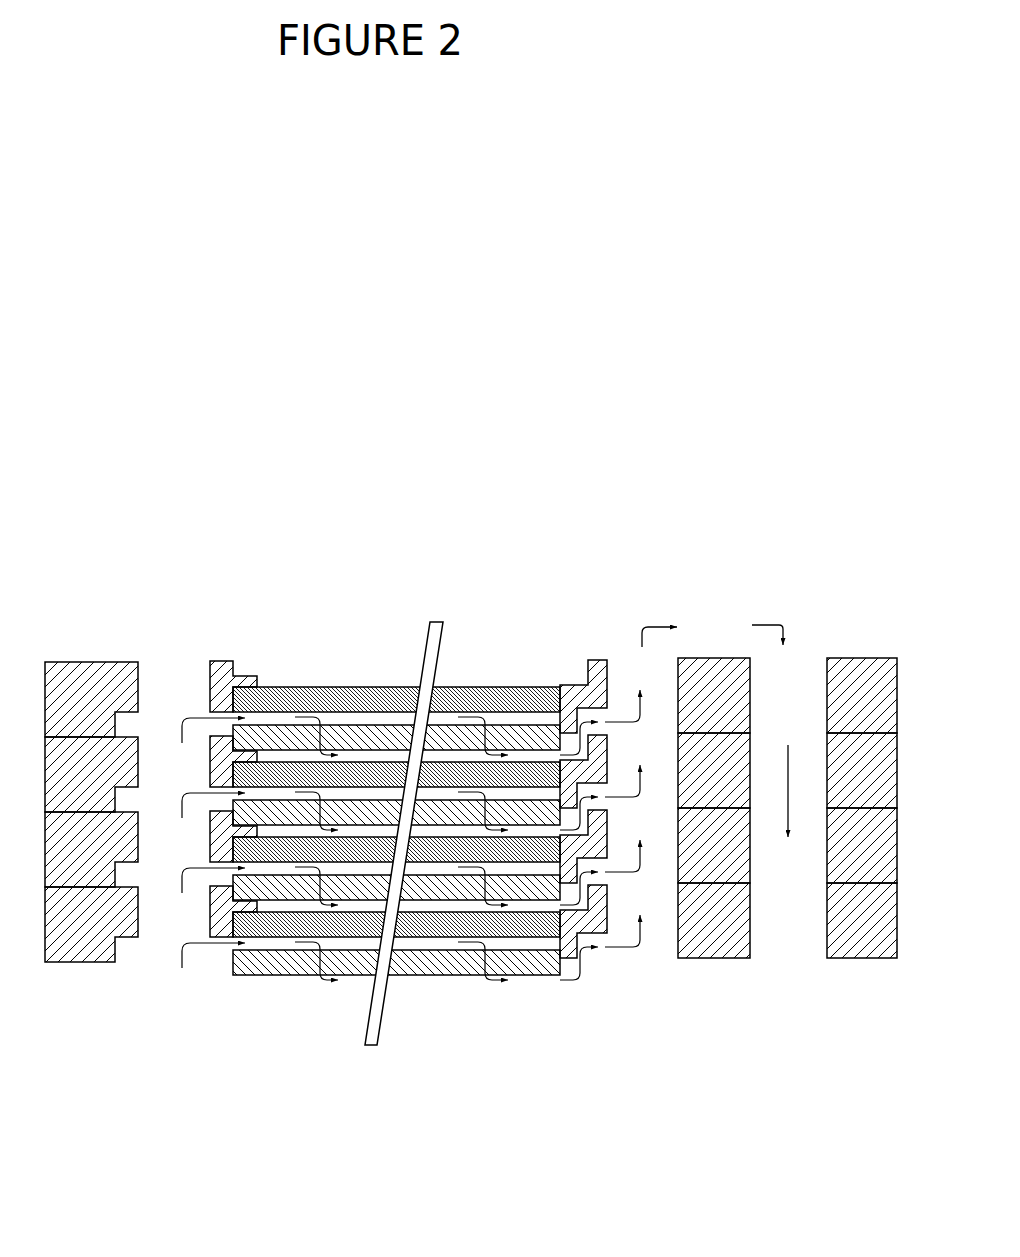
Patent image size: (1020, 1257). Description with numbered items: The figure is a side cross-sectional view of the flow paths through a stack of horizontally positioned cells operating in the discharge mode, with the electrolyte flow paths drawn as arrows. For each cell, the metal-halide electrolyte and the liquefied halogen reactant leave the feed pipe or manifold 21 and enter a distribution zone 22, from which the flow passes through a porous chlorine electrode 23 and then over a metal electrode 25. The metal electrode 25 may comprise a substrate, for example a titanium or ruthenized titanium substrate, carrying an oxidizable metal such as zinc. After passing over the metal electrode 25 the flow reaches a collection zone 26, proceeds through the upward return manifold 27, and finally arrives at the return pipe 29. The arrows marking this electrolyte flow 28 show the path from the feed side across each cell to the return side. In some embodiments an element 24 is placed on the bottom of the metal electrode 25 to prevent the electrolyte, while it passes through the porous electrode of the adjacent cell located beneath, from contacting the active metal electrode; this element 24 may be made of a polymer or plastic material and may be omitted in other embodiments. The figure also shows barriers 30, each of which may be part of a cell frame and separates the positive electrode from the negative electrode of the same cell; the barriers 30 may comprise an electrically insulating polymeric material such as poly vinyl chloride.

The feed pipe or manifold 21 is at (174, 672).
The distribution zone 22 is at (226, 712).
The porous chlorine electrode 23 is at (327, 718).
The element 24 is at (399, 687).
The metal electrode 25 is at (485, 687).
The collection zone 26 is at (578, 685).
The return manifold 27 is at (618, 662).
The electrolyte flow 28 is at (766, 625).
The return pipe 29 is at (803, 663).
The barrier 30 is at (593, 907).